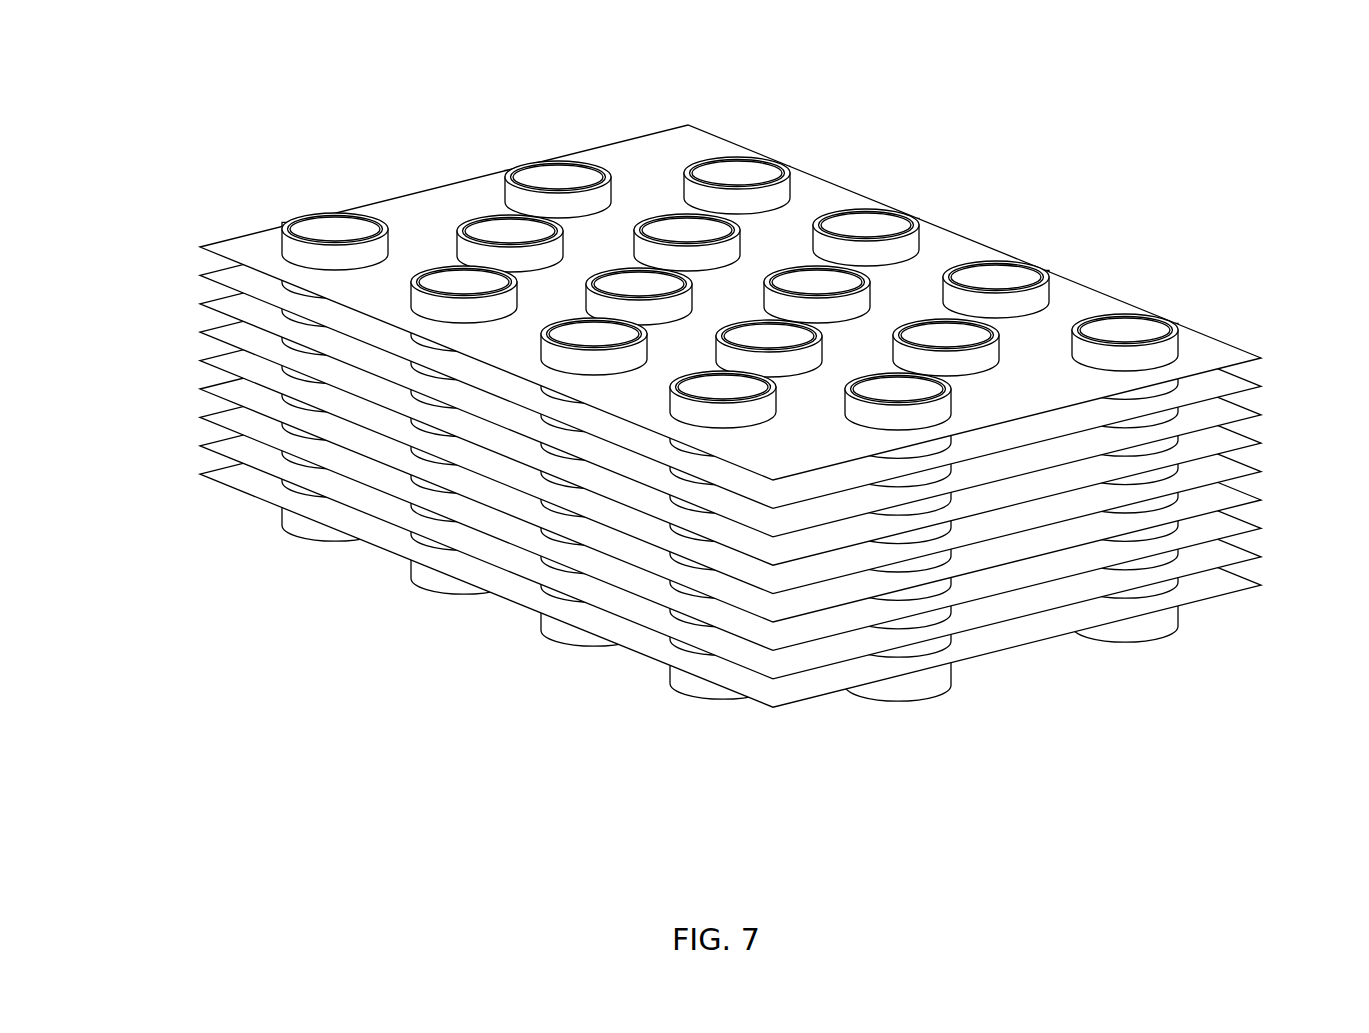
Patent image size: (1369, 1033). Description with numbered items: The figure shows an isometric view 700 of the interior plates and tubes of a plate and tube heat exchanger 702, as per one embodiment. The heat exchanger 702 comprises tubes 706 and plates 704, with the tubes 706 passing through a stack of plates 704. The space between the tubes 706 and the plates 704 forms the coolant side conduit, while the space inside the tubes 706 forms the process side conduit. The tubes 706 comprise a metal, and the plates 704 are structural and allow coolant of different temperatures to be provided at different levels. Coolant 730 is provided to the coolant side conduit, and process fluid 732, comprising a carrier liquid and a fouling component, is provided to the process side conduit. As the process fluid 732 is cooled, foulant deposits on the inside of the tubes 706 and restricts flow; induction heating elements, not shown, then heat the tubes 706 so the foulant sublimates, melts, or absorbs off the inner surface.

The isometric view of interior plates and tubes 700 is at (735, 430).
The heat exchanger 702 is at (695, 372).
The plates 704 is at (427, 210).
The tubes 706 is at (553, 172).
The coolant 730 is at (320, 378).
The process fluid 732 is at (813, 252).